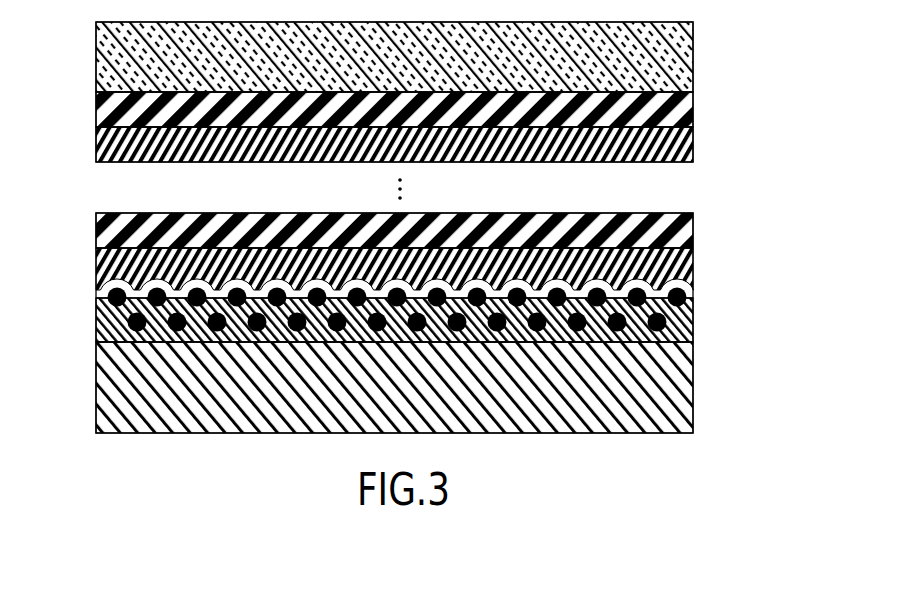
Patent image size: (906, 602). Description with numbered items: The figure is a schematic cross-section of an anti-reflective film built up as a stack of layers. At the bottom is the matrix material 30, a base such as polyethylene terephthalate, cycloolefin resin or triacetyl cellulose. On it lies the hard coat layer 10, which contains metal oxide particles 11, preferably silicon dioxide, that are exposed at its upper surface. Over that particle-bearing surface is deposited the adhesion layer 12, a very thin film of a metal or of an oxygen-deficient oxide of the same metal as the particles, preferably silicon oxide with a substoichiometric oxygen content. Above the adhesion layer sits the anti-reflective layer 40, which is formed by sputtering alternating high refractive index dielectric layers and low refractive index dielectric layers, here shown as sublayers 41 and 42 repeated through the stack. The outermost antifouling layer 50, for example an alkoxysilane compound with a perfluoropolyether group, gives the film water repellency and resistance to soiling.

The antifouling layer 50 is at (693, 57).
The anti-reflective layer 40 is at (411, 191).
The second layer 42 is at (693, 228).
The first layer 41 is at (693, 262).
The hard coat layer 10 is at (412, 311).
The metal oxide particles 11 is at (95, 298).
The adhesion layer 12 is at (693, 290).
The matrix material 30 is at (693, 382).